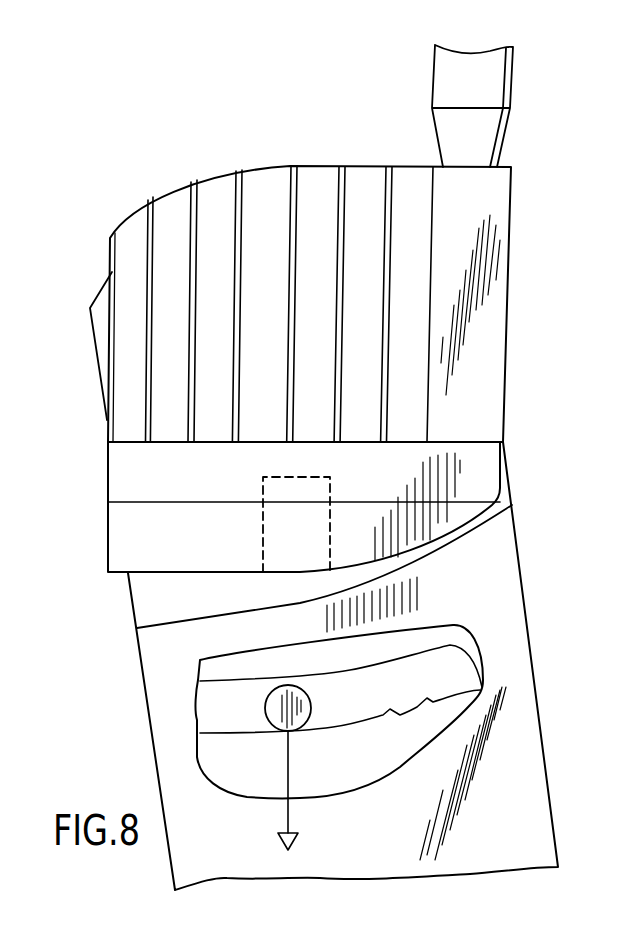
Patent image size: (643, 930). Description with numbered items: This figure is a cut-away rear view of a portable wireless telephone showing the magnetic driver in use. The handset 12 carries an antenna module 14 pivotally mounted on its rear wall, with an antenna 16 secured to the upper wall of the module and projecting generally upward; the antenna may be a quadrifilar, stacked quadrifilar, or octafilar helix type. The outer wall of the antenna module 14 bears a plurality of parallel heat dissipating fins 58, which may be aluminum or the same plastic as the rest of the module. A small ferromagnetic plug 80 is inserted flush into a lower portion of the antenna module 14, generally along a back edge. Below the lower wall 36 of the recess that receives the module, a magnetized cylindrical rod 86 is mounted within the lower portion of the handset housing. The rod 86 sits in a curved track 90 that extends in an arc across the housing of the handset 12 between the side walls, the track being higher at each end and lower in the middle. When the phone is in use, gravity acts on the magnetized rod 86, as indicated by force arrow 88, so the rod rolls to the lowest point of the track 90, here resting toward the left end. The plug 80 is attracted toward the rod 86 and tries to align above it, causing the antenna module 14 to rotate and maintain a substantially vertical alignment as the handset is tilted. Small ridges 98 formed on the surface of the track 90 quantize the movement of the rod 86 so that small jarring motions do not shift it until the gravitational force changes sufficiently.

The handset 12 is at (534, 564).
The antenna module 14 is at (522, 227).
The antenna 16 is at (513, 86).
The lower wall 36 is at (173, 622).
The heat dissipating fins 58 is at (231, 174).
The plug 80 is at (262, 516).
The magnetized rod 86 is at (275, 722).
The force arrow 88 is at (292, 812).
The track 90 is at (463, 660).
The ridges 98 is at (425, 703).